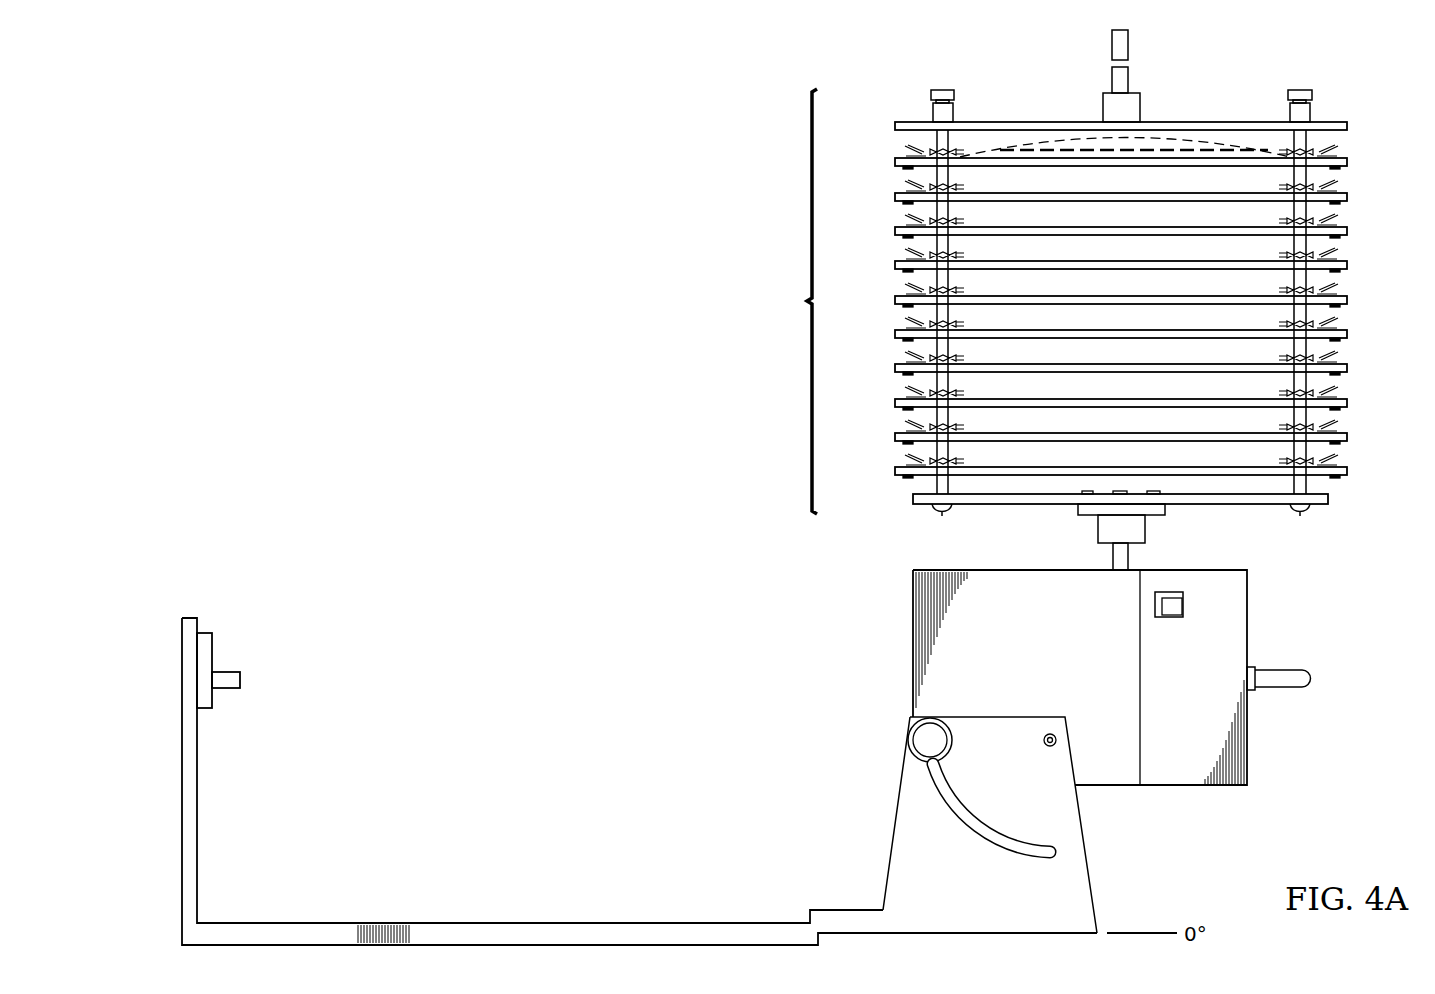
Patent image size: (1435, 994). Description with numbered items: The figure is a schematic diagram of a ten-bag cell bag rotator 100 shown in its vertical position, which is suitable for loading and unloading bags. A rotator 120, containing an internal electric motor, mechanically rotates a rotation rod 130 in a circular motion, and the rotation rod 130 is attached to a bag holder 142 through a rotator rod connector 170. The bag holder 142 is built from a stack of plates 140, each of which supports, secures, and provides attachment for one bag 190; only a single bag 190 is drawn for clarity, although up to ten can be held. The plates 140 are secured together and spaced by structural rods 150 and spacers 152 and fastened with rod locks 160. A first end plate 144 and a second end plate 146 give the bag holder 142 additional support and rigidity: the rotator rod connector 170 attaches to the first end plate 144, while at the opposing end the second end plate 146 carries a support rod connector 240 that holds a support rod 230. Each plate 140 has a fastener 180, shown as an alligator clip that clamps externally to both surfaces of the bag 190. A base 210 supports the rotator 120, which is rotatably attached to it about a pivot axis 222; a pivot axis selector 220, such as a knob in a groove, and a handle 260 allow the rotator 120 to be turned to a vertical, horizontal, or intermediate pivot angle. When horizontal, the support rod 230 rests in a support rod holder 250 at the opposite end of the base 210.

The cell bag rotator 100 is at (449, 141).
The rotator 120 is at (1180, 787).
The rotation rod 130 is at (1112, 557).
The plates 140 is at (1348, 198).
The bag holder 142 is at (808, 301).
The first end plate 144 is at (1240, 506).
The second end plate 146 is at (1243, 121).
The structural rods 150 is at (935, 509).
The spacers 152 is at (1334, 499).
The rod locks 160 is at (942, 88).
The rotator rod connector 170 is at (1148, 530).
The fastener 180 is at (915, 322).
The bag 190 is at (998, 146).
The base 210 is at (182, 798).
The pivot axis selector 220 is at (953, 740).
The pivot axis 222 is at (1050, 748).
The support rod 230 is at (1110, 80).
The support rod connector 240 is at (1142, 107).
The support rod holder 250 is at (213, 650).
The handle 260 is at (1275, 671).